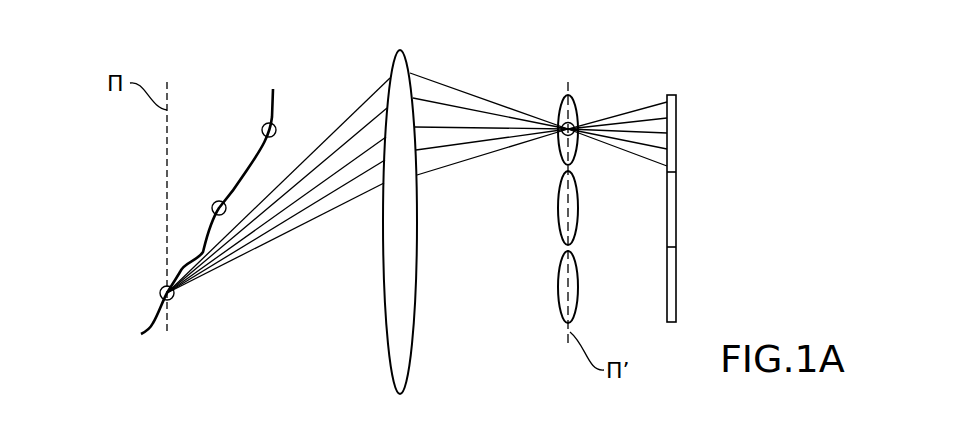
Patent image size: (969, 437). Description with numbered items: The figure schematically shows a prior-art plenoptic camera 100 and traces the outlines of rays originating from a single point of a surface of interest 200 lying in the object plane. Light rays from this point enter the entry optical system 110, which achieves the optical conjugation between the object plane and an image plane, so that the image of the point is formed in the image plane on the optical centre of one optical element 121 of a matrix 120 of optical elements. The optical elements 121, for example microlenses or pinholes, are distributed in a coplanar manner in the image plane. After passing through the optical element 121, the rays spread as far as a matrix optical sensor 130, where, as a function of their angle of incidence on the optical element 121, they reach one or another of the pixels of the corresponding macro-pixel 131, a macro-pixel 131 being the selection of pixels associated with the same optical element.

The plenoptic camera 100 is at (604, 67).
The entry optical system 110 is at (398, 62).
The matrix of optical elements 120 is at (521, 213).
The optical element 121 is at (560, 151).
The matrix optical sensor 130 is at (708, 178).
The macro-pixel 131 is at (670, 117).
The surface of interest 200 is at (272, 100).